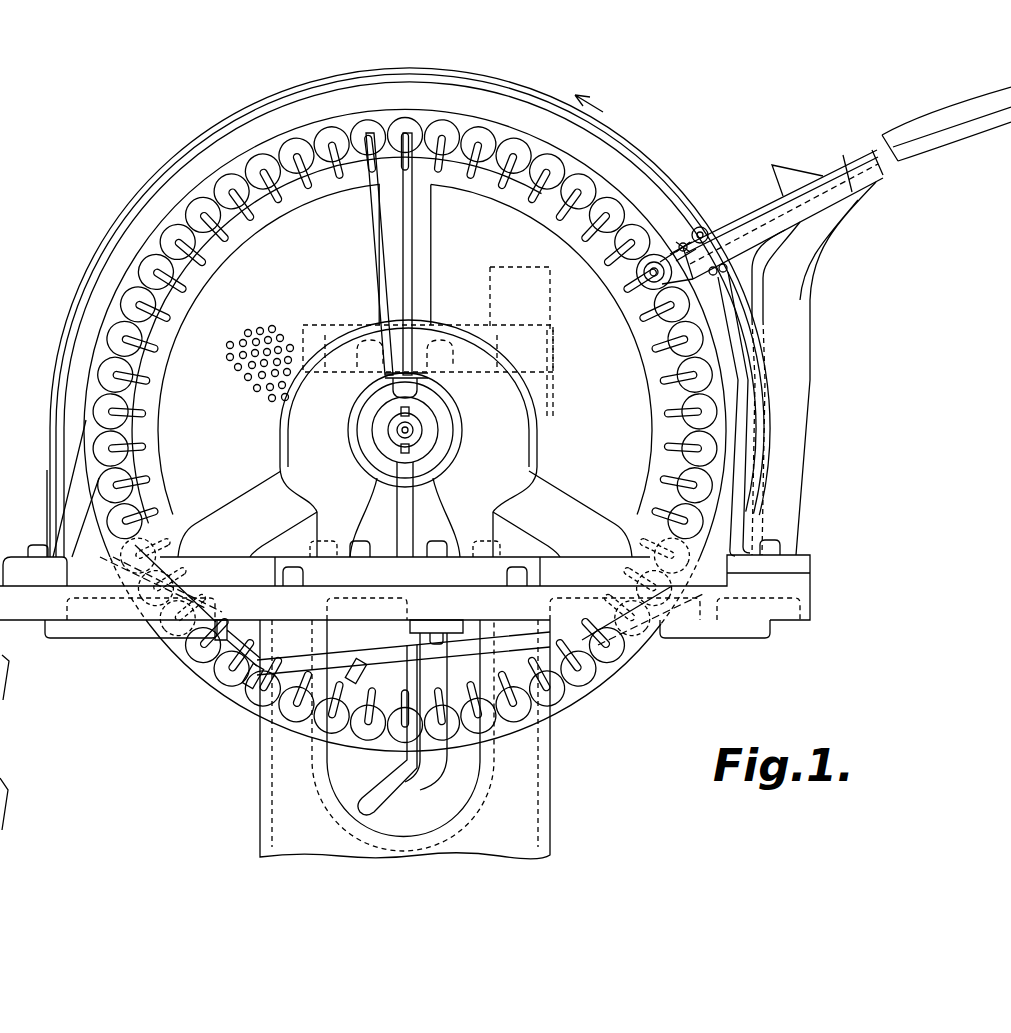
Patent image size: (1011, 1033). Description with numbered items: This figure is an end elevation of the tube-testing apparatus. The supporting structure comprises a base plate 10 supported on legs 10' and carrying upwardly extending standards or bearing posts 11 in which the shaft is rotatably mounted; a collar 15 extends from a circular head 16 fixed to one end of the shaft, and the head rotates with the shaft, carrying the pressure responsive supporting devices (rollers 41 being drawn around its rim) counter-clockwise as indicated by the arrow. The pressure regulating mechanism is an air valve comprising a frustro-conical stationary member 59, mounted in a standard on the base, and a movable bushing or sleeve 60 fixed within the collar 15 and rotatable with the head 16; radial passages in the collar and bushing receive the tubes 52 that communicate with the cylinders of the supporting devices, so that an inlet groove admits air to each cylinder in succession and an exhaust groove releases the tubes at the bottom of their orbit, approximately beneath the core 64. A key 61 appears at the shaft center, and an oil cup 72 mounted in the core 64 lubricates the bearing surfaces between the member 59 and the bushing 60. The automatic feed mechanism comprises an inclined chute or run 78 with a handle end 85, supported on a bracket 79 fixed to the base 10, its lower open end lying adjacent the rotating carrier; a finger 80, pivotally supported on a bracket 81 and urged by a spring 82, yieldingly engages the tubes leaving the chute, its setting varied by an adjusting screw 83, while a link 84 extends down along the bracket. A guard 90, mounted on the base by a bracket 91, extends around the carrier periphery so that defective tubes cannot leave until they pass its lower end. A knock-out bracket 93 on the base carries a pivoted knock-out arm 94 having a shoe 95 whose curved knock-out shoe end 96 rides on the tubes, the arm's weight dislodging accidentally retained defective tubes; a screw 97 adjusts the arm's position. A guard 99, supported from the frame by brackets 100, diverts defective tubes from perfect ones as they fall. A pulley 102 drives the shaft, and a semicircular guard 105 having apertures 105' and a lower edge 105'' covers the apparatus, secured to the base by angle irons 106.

The base plate 10 is at (425, 596).
The legs 10' is at (566, 733).
The standards or bearing posts 11 is at (507, 460).
The collar 15 is at (347, 420).
The head 16 is at (660, 424).
The roller 41 is at (368, 122).
The tubes (ducts) 52 is at (378, 200).
The stationary member 59 is at (443, 430).
The bushing or sleeve 60 is at (447, 407).
The key 61 is at (422, 443).
The core 64 is at (390, 432).
The oil cup 72 is at (395, 388).
The chute or run 78 is at (742, 215).
The bracket 79 is at (807, 300).
The finger 80 is at (660, 262).
The bracket 81 is at (707, 236).
The spring 82 is at (700, 226).
The adjusting screw 83 is at (680, 244).
The link 84 is at (683, 290).
The handle grip 85 is at (843, 168).
The guard 90 is at (117, 315).
The bracket 91 is at (72, 472).
The knock-out bracket 93 is at (450, 652).
The knock-out arm 94 is at (340, 663).
The shoe 95 is at (253, 673).
The knock-out shoe end 96 is at (237, 642).
The screw 97 is at (360, 673).
The guard 99 is at (380, 808).
The brackets 100 is at (430, 772).
The pulley 102 is at (550, 310).
The semicircular guard 105 is at (386, 327).
The apertures 105' is at (278, 345).
The guard edge 105'' is at (25, 513).
The angle irons 106 is at (770, 580).